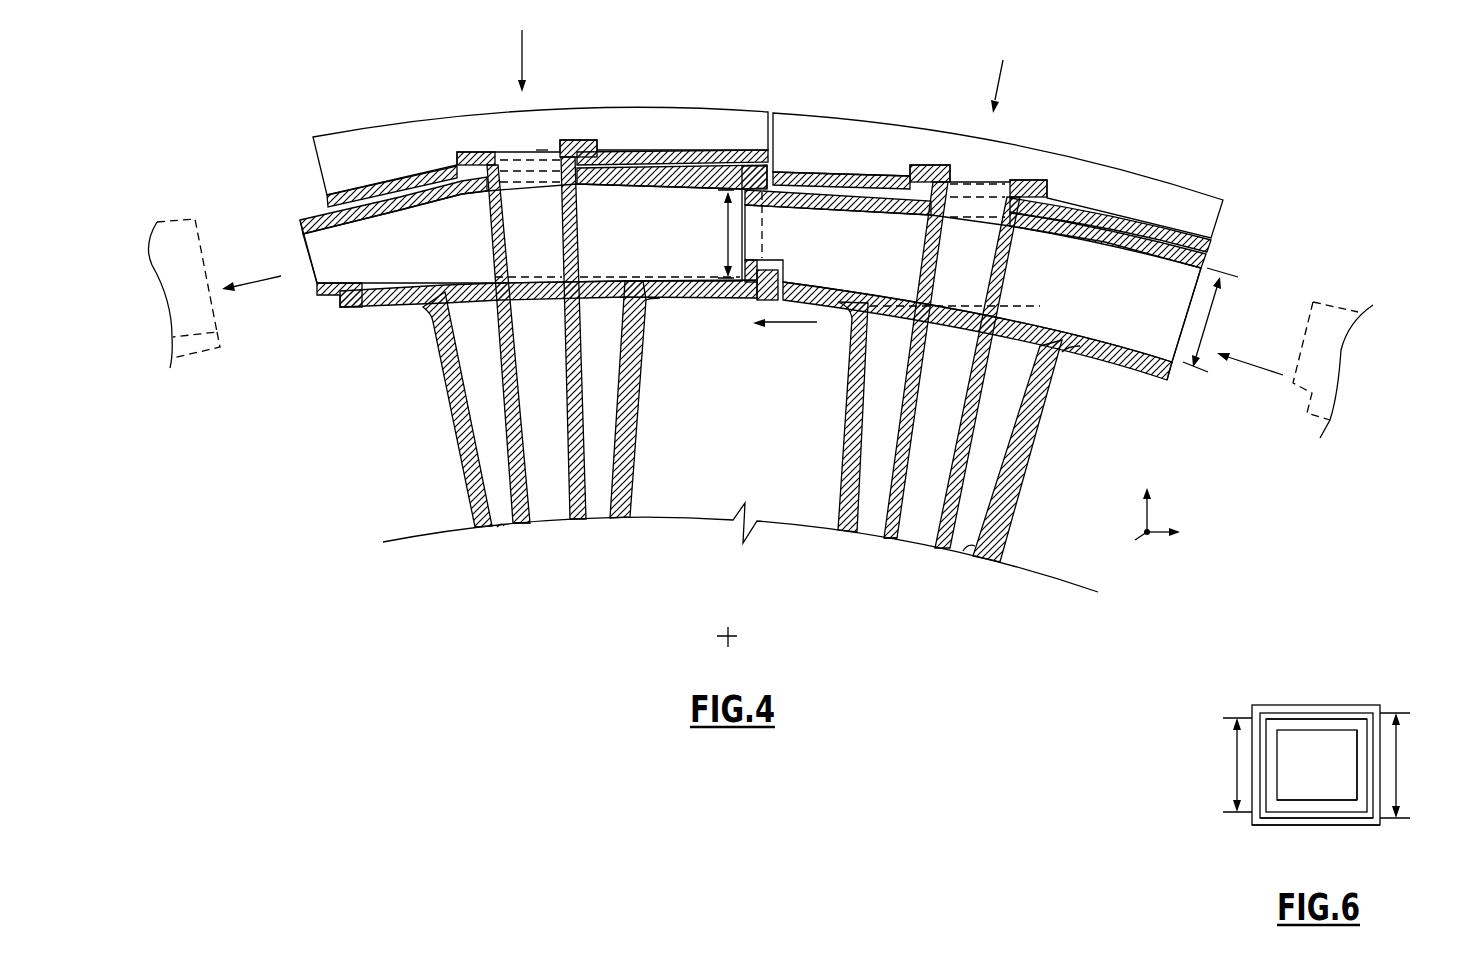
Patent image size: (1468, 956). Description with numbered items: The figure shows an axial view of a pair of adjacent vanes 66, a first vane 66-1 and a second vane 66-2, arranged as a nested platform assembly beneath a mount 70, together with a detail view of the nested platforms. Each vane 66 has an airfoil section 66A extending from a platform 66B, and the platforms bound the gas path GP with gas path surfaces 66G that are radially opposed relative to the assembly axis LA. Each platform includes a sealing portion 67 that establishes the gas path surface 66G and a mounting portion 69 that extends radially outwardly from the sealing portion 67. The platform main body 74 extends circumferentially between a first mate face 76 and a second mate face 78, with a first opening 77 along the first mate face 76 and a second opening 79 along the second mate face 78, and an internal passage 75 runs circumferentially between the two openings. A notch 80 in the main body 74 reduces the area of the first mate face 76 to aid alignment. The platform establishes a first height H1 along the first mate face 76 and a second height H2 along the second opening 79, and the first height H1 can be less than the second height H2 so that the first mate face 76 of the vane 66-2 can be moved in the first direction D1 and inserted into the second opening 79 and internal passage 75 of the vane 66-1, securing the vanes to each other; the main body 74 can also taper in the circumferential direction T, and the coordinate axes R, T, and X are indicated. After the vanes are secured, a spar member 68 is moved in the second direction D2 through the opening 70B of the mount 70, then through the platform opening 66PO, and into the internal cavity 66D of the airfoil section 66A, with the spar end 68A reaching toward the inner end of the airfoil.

In FIG. 4, the vane 66 is at (173, 222).
In FIG. 4, the first vane 66-1 is at (292, 212).
In FIG. 6, the first vane 66-1 is at (1254, 685).
In FIG. 4, the second vane 66-2 is at (1222, 251).
In FIG. 6, the second vane 66-2 is at (1292, 698).
In FIG. 4, the airfoil section 66A is at (463, 458).
In FIG. 4, the first platform 66B is at (299, 232).
In FIG. 6, the first platform 66B is at (1270, 818).
In FIG. 4, the internal cavity 66D is at (499, 528).
In FIG. 4, the gas path surface 66G is at (391, 312).
In FIG. 4, the platform opening 66PO is at (496, 189).
In FIG. 4, the sealing portion 67 is at (400, 312).
In FIG. 4, the spar member 68 is at (591, 128).
In FIG. 4, the spar end 68A is at (521, 524).
In FIG. 4, the mounting portion 69 is at (379, 203).
In FIG. 4, the mount 70 is at (322, 128).
In FIG. 4, the opening of the mount 70B is at (542, 152).
In FIG. 4, the main body 74 is at (422, 189).
In FIG. 4, the internal passage 75 is at (368, 318).
In FIG. 6, the internal passage 75 is at (1318, 808).
In FIG. 4, the first mate face 76 is at (310, 280).
In FIG. 6, the first mate face 76 is at (1362, 740).
In FIG. 4, the first opening 77 is at (751, 271).
In FIG. 6, the first opening 77 is at (1353, 794).
In FIG. 4, the second mate face 78 is at (205, 250).
In FIG. 6, the second mate face 78 is at (1320, 708).
In FIG. 4, the second opening 79 is at (1195, 367).
In FIG. 6, the second opening 79 is at (1354, 722).
In FIG. 4, the notch 80 is at (343, 316).
In FIG. 4, the first direction D1 is at (250, 284).
In FIG. 4, the second direction D2 is at (528, 48).
In FIG. 4, the first height H1 is at (720, 201).
In FIG. 6, the first height H1 is at (1237, 760).
In FIG. 4, the second height H2 is at (1217, 326).
In FIG. 6, the second height H2 is at (1396, 752).
In FIG. 4, the gas path GP is at (755, 424).
In FIG. 4, the assembly axis LA is at (730, 638).
In FIG. 4, the radial axis R is at (1147, 497).
In FIG. 4, the circumferential direction T is at (1172, 531).
In FIG. 4, the axial axis X is at (1135, 540).